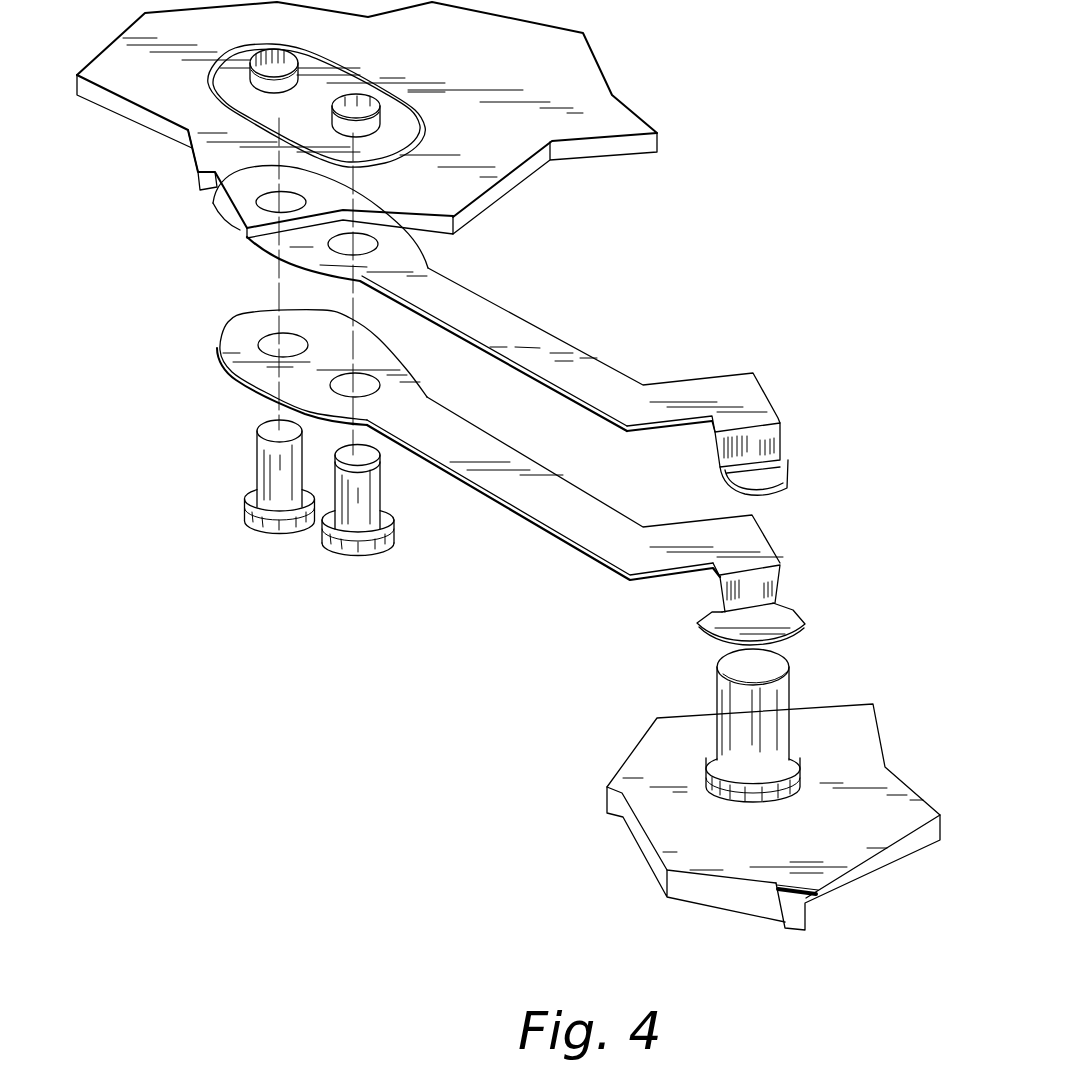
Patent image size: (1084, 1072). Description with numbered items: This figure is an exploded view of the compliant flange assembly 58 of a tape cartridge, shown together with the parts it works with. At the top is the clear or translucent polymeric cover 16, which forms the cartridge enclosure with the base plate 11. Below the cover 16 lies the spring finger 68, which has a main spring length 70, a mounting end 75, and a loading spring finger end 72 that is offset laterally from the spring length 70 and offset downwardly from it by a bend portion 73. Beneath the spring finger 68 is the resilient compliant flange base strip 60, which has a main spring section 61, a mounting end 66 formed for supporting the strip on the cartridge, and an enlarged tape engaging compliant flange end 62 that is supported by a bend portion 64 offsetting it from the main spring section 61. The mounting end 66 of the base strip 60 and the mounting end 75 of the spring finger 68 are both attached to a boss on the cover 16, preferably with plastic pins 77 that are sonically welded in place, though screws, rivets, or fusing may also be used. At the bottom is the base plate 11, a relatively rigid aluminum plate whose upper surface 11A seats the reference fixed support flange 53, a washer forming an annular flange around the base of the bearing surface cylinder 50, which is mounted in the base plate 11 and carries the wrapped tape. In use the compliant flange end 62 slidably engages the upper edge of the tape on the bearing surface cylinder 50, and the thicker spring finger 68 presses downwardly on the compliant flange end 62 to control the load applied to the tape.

The cover 16 is at (552, 66).
The compliant flange assembly 58 is at (506, 349).
The spring finger 68 is at (623, 366).
The main spring length 70 is at (571, 376).
The loading spring finger end 72 is at (757, 482).
The bend portion 73 is at (755, 445).
The mounting end 75 is at (272, 248).
The compliant flange base strip 60 is at (541, 492).
The main spring section 61 is at (433, 432).
The mounting end 66 is at (322, 332).
The bend portion 64 is at (735, 598).
The compliant flange end 62 is at (763, 636).
The plastic pins 77 is at (342, 543).
The bearing surface cylinder 50 is at (670, 746).
The reference fixed support flange 53 is at (723, 783).
The base plate 11 is at (742, 804).
The upper surface 11A is at (835, 773).